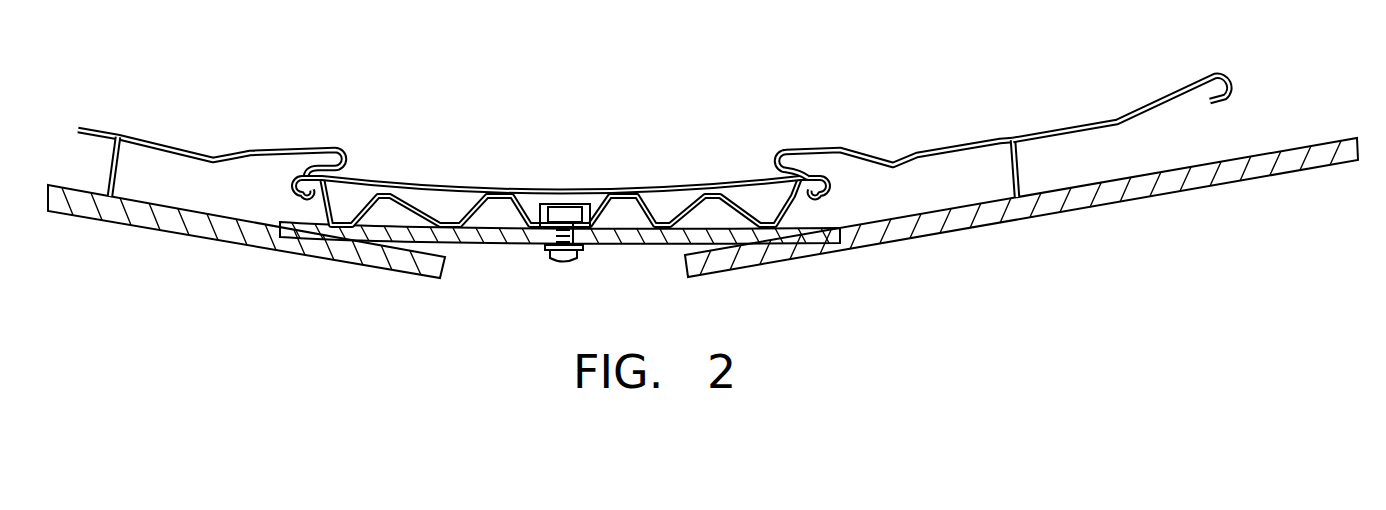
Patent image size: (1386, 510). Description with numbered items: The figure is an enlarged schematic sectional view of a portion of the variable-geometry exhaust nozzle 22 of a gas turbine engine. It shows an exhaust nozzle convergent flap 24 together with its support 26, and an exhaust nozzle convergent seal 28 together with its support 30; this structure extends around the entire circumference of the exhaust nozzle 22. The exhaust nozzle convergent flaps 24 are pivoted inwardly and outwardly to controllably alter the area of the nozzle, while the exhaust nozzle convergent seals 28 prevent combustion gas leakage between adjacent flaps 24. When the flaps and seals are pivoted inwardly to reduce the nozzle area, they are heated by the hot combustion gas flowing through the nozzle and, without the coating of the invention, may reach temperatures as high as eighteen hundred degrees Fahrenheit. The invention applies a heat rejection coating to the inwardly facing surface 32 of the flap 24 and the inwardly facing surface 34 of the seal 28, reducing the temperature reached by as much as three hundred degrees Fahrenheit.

The variable-geometry exhaust nozzle 22 is at (185, 115).
The exhaust nozzle convergent flap 24 is at (1003, 132).
The support 26 is at (897, 241).
The exhaust nozzle convergent seal 28 is at (560, 217).
The support 30 is at (498, 247).
The inwardly facing surface 32 is at (1055, 127).
The inwardly facing surface 34 is at (433, 187).